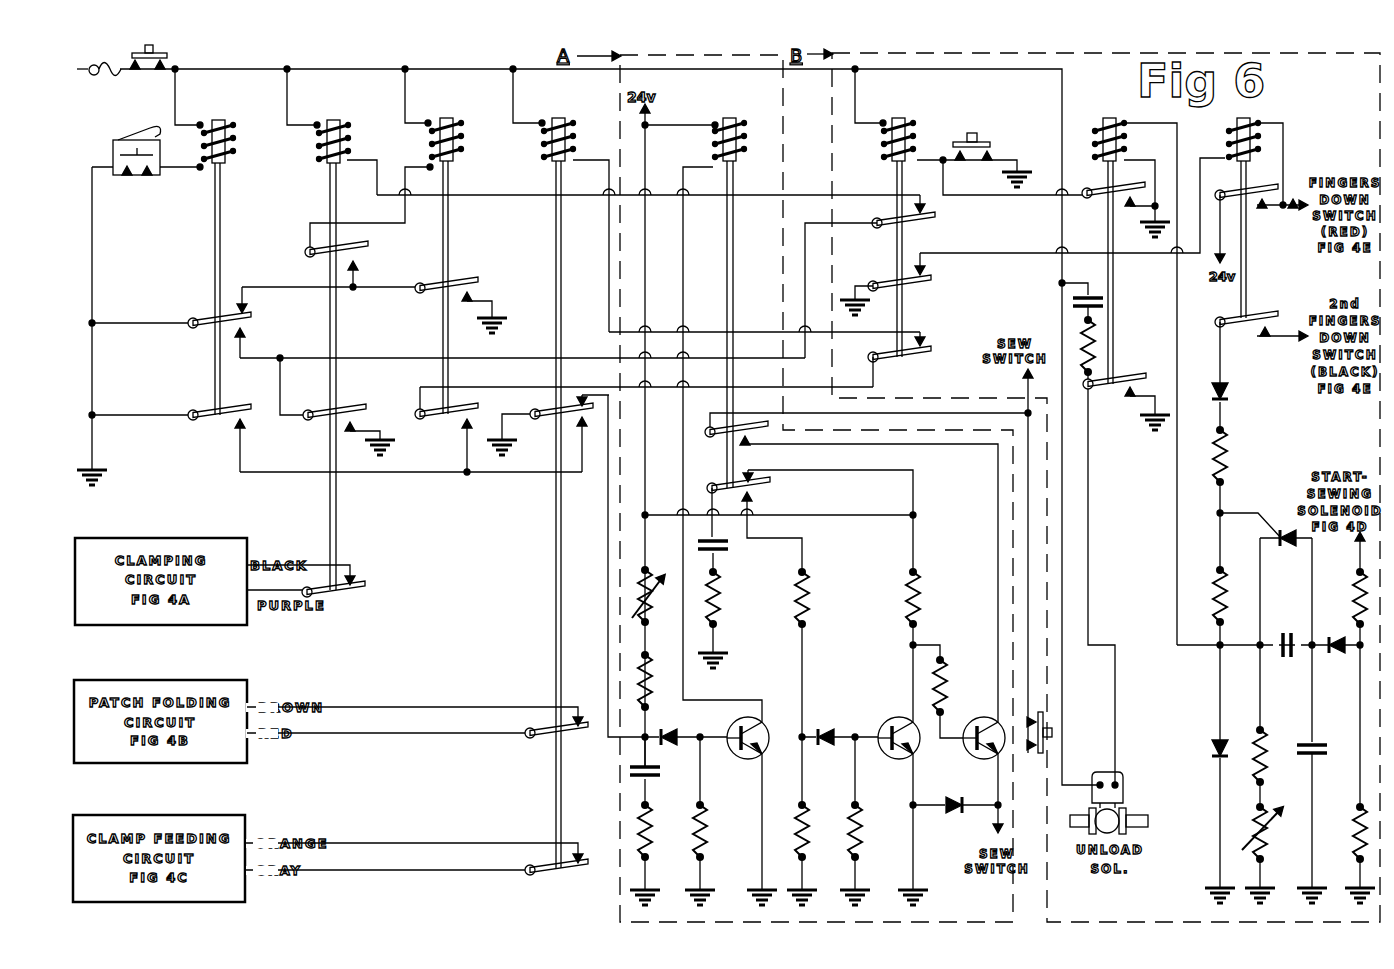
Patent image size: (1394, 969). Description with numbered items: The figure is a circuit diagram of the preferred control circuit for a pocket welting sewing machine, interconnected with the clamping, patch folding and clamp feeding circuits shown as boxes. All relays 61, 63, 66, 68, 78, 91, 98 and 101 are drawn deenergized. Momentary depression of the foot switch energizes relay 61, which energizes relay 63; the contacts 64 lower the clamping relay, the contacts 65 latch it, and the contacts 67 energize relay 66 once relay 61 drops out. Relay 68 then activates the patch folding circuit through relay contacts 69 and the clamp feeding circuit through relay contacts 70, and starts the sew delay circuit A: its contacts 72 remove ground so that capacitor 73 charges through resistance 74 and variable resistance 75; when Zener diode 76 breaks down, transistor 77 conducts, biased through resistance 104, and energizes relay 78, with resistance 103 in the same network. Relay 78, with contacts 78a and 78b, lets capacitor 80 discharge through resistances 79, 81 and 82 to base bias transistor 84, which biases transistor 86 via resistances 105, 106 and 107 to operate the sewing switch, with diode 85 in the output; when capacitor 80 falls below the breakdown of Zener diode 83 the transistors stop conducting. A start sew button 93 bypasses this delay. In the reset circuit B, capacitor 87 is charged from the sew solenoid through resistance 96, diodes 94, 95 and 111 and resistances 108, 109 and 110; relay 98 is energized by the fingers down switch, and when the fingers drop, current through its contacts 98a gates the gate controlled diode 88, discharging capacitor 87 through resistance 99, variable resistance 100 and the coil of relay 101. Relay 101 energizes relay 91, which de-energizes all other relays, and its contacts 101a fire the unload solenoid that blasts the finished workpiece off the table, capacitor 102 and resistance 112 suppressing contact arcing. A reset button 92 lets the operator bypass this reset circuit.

The relay 61 is at (229, 156).
The relay 63 is at (347, 157).
The contacts of relay 63 64 is at (368, 578).
The contacts of relay 63 65 is at (364, 412).
The relay 66 is at (461, 157).
The contacts of relay 63 67 is at (368, 250).
The relay 68 is at (576, 155).
The relay contacts 69 is at (582, 715).
The relay contacts 70 is at (584, 856).
The contacts of relay 68 72 is at (590, 414).
The capacitor 73 is at (660, 773).
The resistance 74 is at (650, 676).
The variable resistance 75 is at (648, 576).
The Zener diode 76 is at (670, 728).
The transistor 77 is at (740, 756).
The relay 78 is at (745, 150).
The contacts of relay 78 78a is at (766, 492).
The contacts of relay 78 78b is at (776, 410).
The resistance 79 is at (721, 602).
The capacitor 80 is at (730, 548).
The resistance 81 is at (810, 600).
The resistance 82 is at (808, 826).
The Zener diode 83 is at (826, 726).
The transistor 84 is at (890, 758).
The diode 85 is at (950, 815).
The transistor 86 is at (968, 756).
The capacitor 87 is at (1330, 748).
The gate controlled diode 88 is at (1290, 548).
The relay 91 is at (915, 150).
The reset button 92 is at (988, 148).
The start sew button 93 is at (1292, 660).
The diode 94 is at (1230, 392).
The diode 95 is at (1340, 654).
The resistance 96 is at (1356, 598).
The relay 98 is at (1228, 131).
The contacts of relay 98 98a is at (1288, 318).
The resistance 99 is at (1268, 752).
The variable resistance 100 is at (1270, 818).
The relay 101 is at (1095, 131).
The contacts of relay 101 101a is at (1155, 366).
The capacitor 102 is at (1105, 300).
The resistance 103 is at (650, 855).
The resistance 104 is at (706, 855).
The resistance 105 is at (860, 855).
The resistance 106 is at (920, 598).
The resistance 107 is at (947, 690).
The resistance 108 is at (1356, 835).
The resistance 109 is at (1228, 590).
The resistance 110 is at (1230, 462).
The diode 111 is at (1208, 749).
The resistance 112 is at (1100, 342).